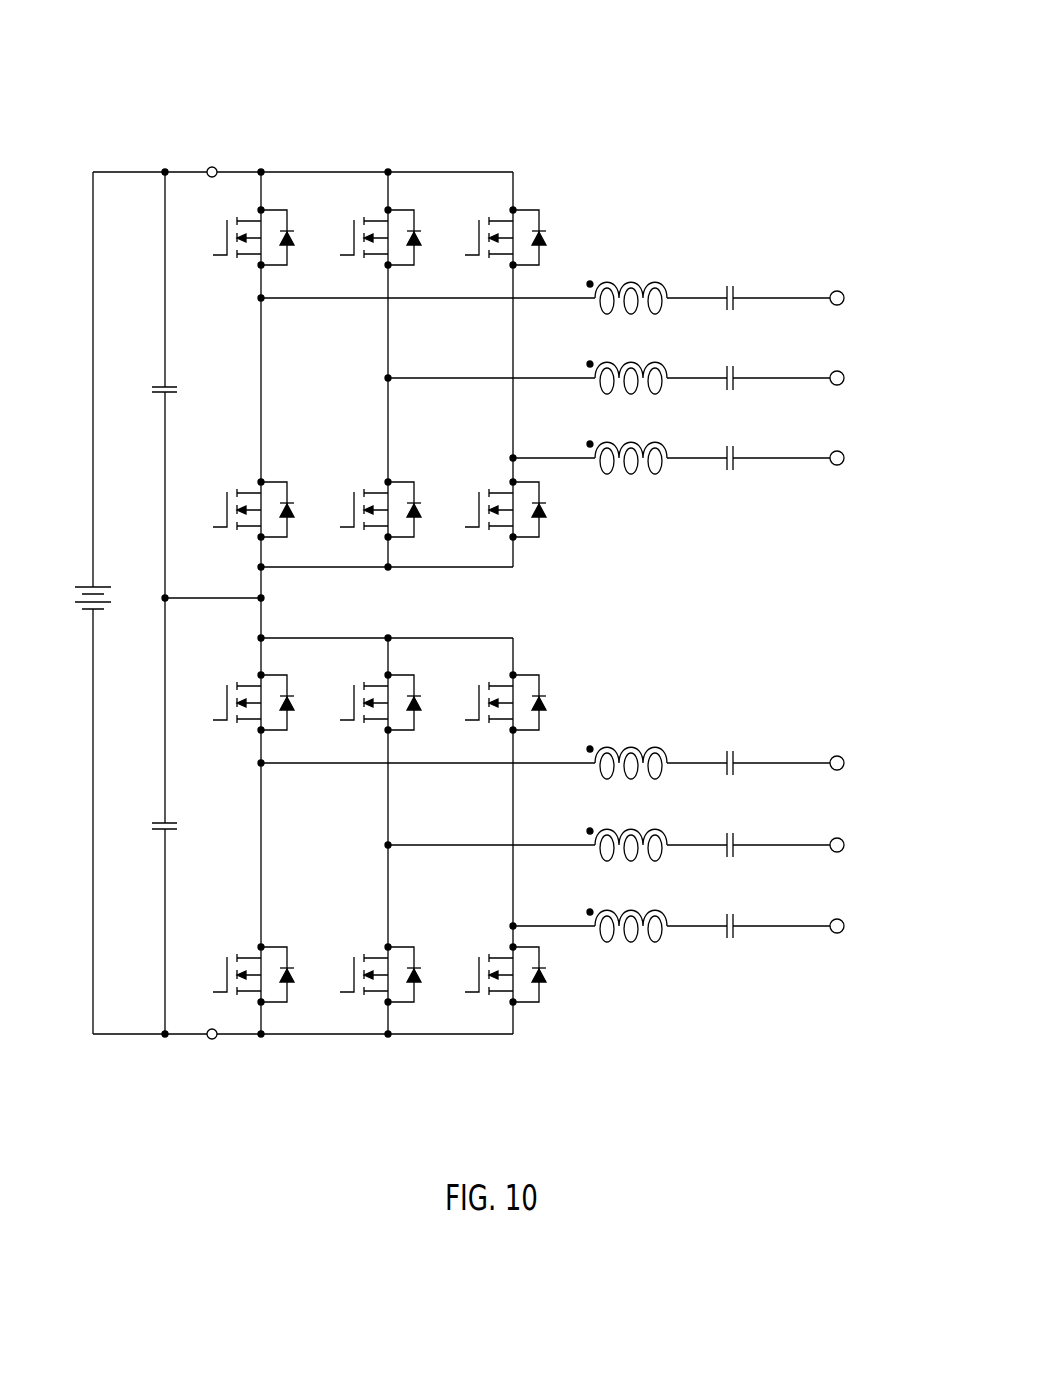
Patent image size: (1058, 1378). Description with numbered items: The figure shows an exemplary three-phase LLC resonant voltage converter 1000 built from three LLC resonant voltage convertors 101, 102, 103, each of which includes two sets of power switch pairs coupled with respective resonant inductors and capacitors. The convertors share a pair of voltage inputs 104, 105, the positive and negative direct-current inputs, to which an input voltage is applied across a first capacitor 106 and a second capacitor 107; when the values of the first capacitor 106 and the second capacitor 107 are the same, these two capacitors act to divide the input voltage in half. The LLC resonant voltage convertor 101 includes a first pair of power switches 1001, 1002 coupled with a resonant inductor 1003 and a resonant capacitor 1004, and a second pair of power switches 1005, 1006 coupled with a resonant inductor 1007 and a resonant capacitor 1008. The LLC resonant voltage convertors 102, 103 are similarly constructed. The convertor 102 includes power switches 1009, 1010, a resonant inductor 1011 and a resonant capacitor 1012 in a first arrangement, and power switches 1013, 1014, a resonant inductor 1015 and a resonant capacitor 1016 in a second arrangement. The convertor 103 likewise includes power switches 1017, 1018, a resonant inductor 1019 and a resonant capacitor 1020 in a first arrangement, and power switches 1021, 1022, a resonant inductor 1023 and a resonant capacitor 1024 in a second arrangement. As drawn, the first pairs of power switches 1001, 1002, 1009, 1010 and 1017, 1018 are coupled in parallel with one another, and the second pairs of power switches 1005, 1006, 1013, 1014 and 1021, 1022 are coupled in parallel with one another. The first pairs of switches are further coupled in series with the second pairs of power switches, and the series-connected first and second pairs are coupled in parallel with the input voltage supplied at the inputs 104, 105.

The three-phase LLC resonant voltage converter 1000 is at (143, 47).
The LLC resonant voltage convertor 101 is at (237, 552).
The LLC resonant voltage convertor 102 is at (322, 552).
The LLC resonant voltage convertor 103 is at (397, 136).
The voltage input 104 is at (211, 166).
The voltage input 105 is at (211, 1040).
The capacitor C1 106 is at (162, 385).
The capacitor C2 107 is at (158, 830).
The power switch 1001 is at (226, 238).
The power switch 1002 is at (226, 510).
The resonant inductor 1003 is at (639, 283).
The resonant capacitor 1004 is at (736, 290).
The power switch 1005 is at (226, 703).
The power switch 1006 is at (226, 975).
The resonant inductor 1007 is at (639, 748).
The resonant capacitor 1008 is at (736, 756).
The power switch 1009 is at (353, 238).
The power switch 1010 is at (353, 510).
The resonant inductor 1011 is at (639, 363).
The resonant capacitor 1012 is at (736, 370).
The power switch 1013 is at (353, 703).
The power switch 1014 is at (353, 975).
The resonant inductor 1015 is at (639, 830).
The resonant capacitor 1016 is at (736, 838).
The power switch 1017 is at (478, 238).
The power switch 1018 is at (478, 510).
The resonant inductor 1019 is at (639, 443).
The resonant capacitor 1020 is at (736, 452).
The power switch 1021 is at (478, 703).
The power switch 1022 is at (478, 975).
The resonant inductor 1023 is at (639, 911).
The resonant capacitor 1024 is at (736, 919).